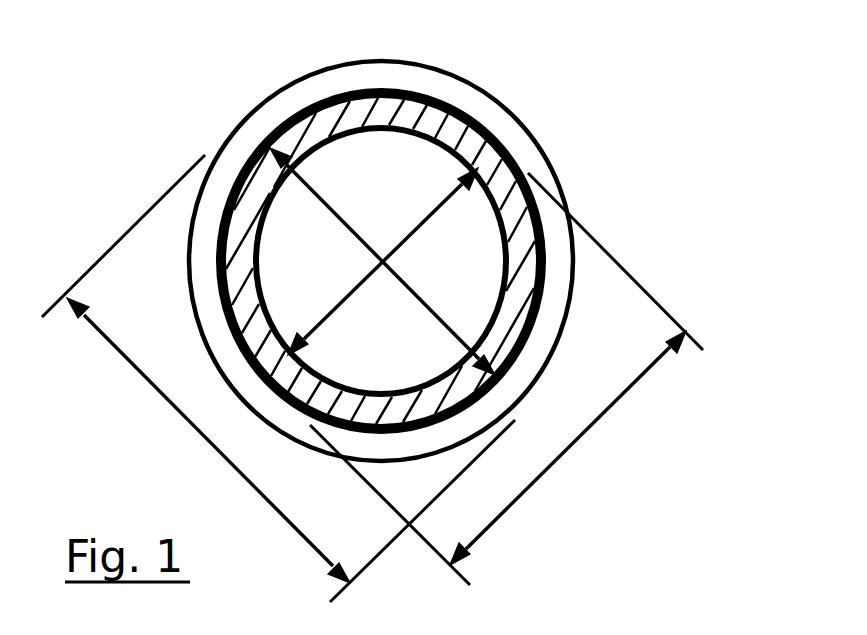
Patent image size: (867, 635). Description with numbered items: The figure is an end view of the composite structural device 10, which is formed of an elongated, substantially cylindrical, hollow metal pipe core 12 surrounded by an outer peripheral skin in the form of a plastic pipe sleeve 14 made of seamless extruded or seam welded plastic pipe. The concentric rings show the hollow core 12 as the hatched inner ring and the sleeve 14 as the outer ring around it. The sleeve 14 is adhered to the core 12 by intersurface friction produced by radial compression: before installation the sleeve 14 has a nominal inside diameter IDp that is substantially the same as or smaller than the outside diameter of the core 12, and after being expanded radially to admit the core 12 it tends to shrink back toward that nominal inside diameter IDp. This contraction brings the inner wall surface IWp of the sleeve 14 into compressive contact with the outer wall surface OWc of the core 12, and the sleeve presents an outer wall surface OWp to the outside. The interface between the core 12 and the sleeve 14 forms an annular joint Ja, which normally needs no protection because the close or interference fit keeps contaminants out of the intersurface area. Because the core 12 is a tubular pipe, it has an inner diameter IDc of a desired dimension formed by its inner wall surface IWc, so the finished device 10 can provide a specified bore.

The composite structural device 10 is at (672, 109).
The metal pipe core 12 is at (468, 142).
The plastic pipe sleeve 14 is at (562, 280).
The annular joint Ja is at (533, 138).
The inner wall surface of the plastic pipe sleeve IWp is at (265, 138).
The outer wall of pipe OWp is at (228, 139).
The nominal inside diameter of the plastic pipe sleeve IDp is at (330, 208).
The inner diameter of the pipe core IDc is at (352, 293).
The outer wall surface of the core OWc is at (530, 265).
The inner wall surface of the pipe core IWc is at (500, 325).